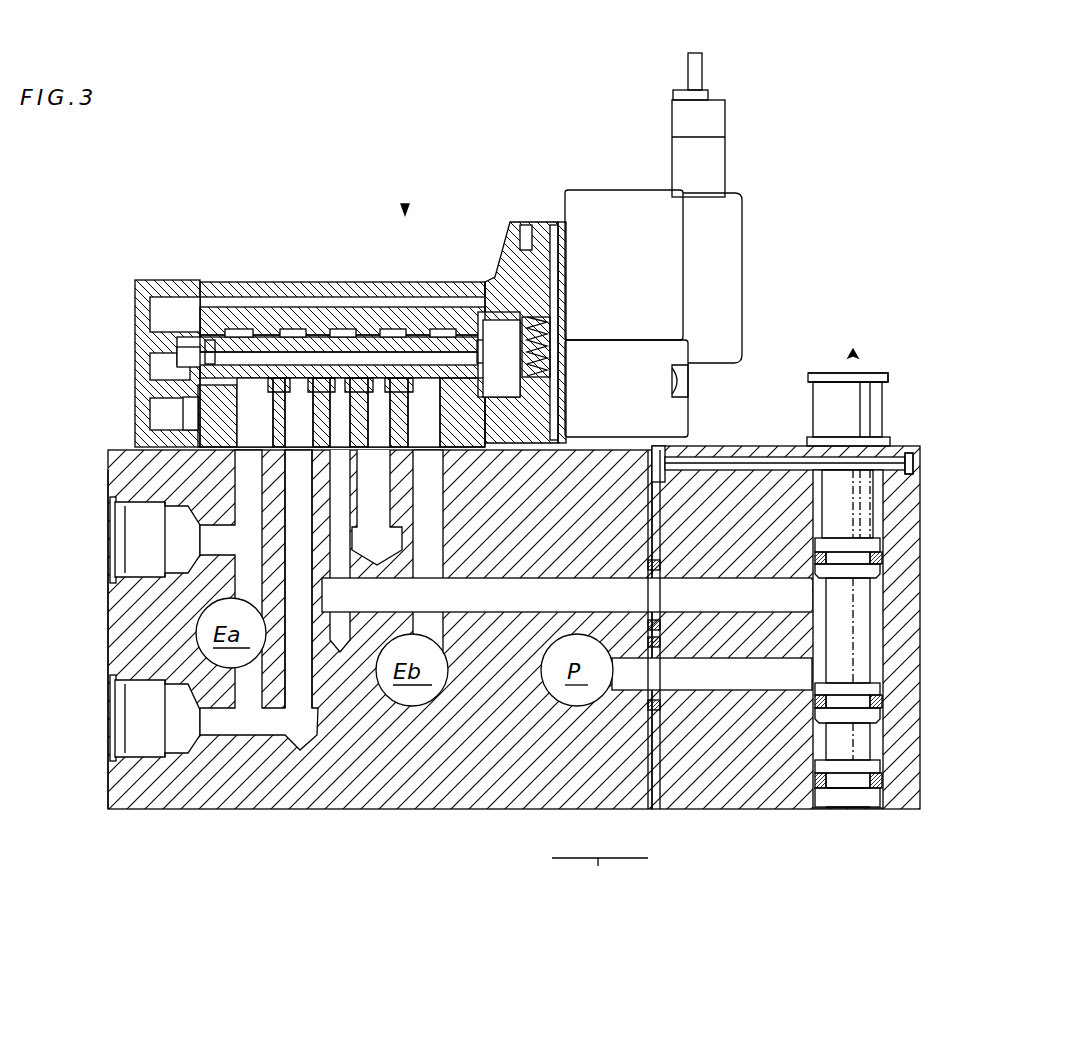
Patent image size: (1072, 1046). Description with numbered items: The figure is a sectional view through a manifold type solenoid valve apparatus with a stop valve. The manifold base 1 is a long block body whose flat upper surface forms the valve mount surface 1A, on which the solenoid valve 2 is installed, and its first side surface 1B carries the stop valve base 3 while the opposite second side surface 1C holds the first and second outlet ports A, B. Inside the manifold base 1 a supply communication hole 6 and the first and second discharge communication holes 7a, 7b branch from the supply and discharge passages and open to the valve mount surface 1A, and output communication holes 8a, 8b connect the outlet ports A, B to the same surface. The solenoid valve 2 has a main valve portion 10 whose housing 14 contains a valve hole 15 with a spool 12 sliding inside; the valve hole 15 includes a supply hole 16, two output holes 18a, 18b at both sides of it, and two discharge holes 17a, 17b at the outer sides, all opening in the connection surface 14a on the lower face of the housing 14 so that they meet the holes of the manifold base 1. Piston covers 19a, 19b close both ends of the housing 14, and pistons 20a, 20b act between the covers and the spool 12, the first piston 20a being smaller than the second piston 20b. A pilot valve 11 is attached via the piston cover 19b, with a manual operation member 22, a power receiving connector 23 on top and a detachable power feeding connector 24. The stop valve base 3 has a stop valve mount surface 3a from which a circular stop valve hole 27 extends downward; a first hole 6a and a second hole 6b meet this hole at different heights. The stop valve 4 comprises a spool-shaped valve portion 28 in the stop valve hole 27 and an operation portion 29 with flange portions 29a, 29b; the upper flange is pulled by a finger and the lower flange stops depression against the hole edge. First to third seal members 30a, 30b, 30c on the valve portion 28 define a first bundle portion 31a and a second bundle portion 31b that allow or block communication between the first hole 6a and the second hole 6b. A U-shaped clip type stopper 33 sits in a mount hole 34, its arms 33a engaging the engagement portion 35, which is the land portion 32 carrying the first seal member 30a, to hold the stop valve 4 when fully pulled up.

The manifold base 1 is at (515, 770).
The valve mount surface 1A is at (200, 420).
The first side surface 1B is at (665, 770).
The second side surface 1C is at (108, 792).
The solenoid valve 2 is at (405, 212).
The stop valve base 3 is at (765, 790).
The stop valve mount surface 3a is at (918, 455).
The stop valve 4 is at (855, 357).
The supply communication hole 6 is at (600, 873).
The first hole 6a is at (665, 690).
The second hole 6b is at (527, 592).
The first discharge communication hole 7a is at (245, 570).
The second discharge communication hole 7b is at (450, 620).
The output communication hole 8a is at (245, 720).
The output communication hole 8b is at (378, 560).
The main valve portion 10 is at (152, 280).
The pilot valve 11 is at (630, 200).
The spool 12 is at (325, 390).
The housing 14 is at (355, 350).
The connection surface 14a is at (220, 450).
The valve hole 15 is at (415, 345).
The supply hole 16 is at (340, 400).
The discharge hole 17a is at (262, 400).
The discharge hole 17b is at (425, 420).
The output hole 18a is at (300, 405).
The output hole 18b is at (380, 395).
The first piston cover 19a is at (142, 302).
The second piston cover 19b is at (522, 240).
The first piston 20a is at (175, 350).
The second piston 20b is at (512, 340).
The operation member 22 is at (556, 235).
The power receiving connector 23 is at (725, 162).
The power feeding connector 24 is at (730, 112).
The stop valve hole 27 is at (830, 762).
The valve portion 28 is at (868, 600).
The operation portion 29 is at (840, 400).
The flange portion 29a is at (890, 392).
The flange portion 29b is at (885, 440).
The first seal member 30a is at (882, 558).
The second seal member 30b is at (882, 690).
The third seal member 30c is at (882, 780).
The first bundle portion 31a is at (850, 630).
The second bundle portion 31b is at (850, 740).
The land portion 32 is at (882, 570).
The stopper 33 is at (735, 400).
The arm 33a is at (770, 465).
The mount hole 34 is at (914, 470).
The engagement portion 35 is at (880, 540).
The first outlet port A is at (125, 722).
The second outlet port B is at (120, 540).